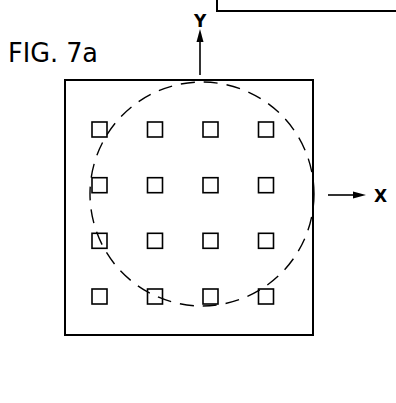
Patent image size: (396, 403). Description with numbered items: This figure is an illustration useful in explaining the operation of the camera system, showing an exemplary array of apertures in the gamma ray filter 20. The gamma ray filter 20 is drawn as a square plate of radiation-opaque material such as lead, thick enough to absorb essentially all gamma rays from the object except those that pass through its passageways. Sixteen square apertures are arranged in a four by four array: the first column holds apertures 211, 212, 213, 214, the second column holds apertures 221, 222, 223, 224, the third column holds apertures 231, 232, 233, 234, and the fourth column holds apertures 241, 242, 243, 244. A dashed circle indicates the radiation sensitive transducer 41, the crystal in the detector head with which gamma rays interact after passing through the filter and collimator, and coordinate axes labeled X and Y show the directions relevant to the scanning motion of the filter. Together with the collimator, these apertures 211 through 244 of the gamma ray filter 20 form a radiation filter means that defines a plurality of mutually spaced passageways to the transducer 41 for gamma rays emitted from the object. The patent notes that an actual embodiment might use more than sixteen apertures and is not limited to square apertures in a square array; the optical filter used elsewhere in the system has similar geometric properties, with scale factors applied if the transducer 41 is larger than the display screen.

The gamma ray filter 20 is at (297, 233).
The radiation sensitive transducer 41 is at (303, 134).
The aperture 211 is at (98, 304).
The aperture 212 is at (98, 248).
The aperture 213 is at (98, 193).
The aperture 214 is at (98, 137).
The aperture 221 is at (154, 304).
The aperture 222 is at (154, 248).
The aperture 223 is at (154, 193).
The aperture 224 is at (154, 137).
The aperture 231 is at (209, 304).
The aperture 232 is at (209, 248).
The aperture 233 is at (209, 193).
The aperture 234 is at (209, 137).
The aperture 241 is at (264, 304).
The aperture 242 is at (264, 248).
The aperture 243 is at (264, 193).
The aperture 244 is at (264, 137).